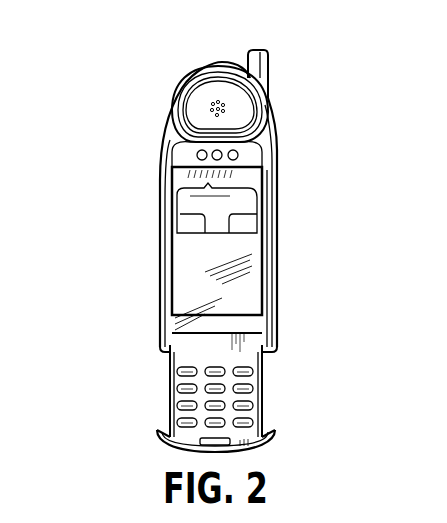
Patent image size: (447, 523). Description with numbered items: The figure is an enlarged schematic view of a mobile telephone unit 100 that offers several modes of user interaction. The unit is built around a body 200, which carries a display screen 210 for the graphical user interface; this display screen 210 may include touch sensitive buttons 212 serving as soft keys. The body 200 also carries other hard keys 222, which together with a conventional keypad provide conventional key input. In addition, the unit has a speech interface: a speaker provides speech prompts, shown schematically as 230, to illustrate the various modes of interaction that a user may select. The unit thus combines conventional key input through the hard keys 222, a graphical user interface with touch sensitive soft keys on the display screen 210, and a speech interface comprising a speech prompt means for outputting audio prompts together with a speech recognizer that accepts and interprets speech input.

The mobile telephone unit 100 is at (177, 82).
The body 200 is at (276, 288).
The display screen 210 is at (190, 275).
The touch sensitive buttons 212 is at (240, 220).
The hard keys 222 is at (240, 155).
The speech prompts 230 is at (256, 372).